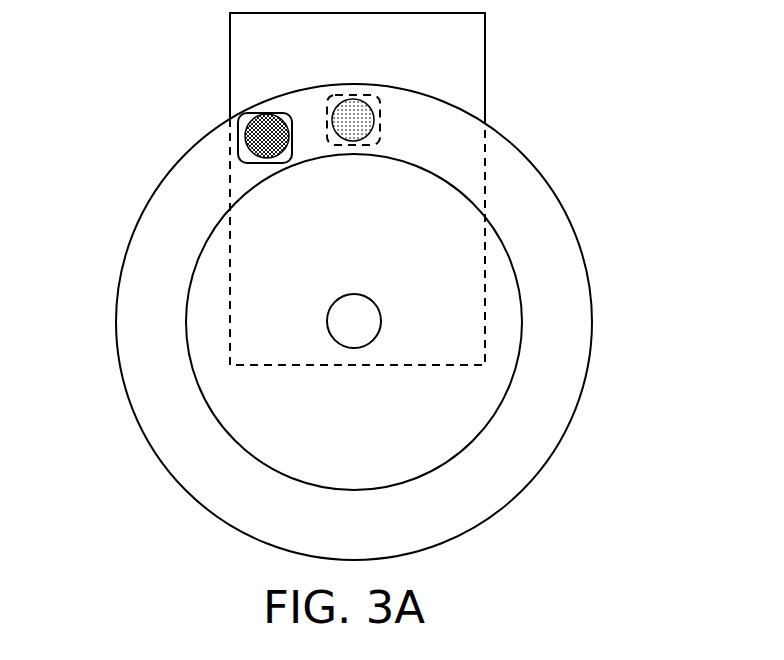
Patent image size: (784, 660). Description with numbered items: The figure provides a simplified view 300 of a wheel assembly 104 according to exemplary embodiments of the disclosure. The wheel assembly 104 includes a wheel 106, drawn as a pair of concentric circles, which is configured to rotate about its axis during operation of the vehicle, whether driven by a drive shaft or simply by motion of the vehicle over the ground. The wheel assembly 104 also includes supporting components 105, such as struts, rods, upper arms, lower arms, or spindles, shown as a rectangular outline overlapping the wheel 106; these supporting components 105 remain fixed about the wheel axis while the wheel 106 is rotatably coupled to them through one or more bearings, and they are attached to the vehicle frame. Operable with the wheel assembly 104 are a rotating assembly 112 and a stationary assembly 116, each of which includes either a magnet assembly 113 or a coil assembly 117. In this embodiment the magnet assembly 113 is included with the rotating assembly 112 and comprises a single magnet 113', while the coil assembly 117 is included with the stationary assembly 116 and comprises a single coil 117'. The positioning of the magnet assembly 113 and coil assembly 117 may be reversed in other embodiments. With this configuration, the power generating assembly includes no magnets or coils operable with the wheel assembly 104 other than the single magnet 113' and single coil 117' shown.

The simplified view 300 is at (658, 33).
The wheel assembly 104 is at (144, 52).
The supporting components 105 is at (485, 62).
The wheel 106 is at (562, 205).
The rotating assembly 112 is at (238, 132).
The magnet assembly 113 is at (293, 173).
The magnet 113' is at (297, 161).
The stationary assembly 116 is at (355, 150).
The coil assembly 117 is at (394, 118).
The coil 117' is at (397, 120).